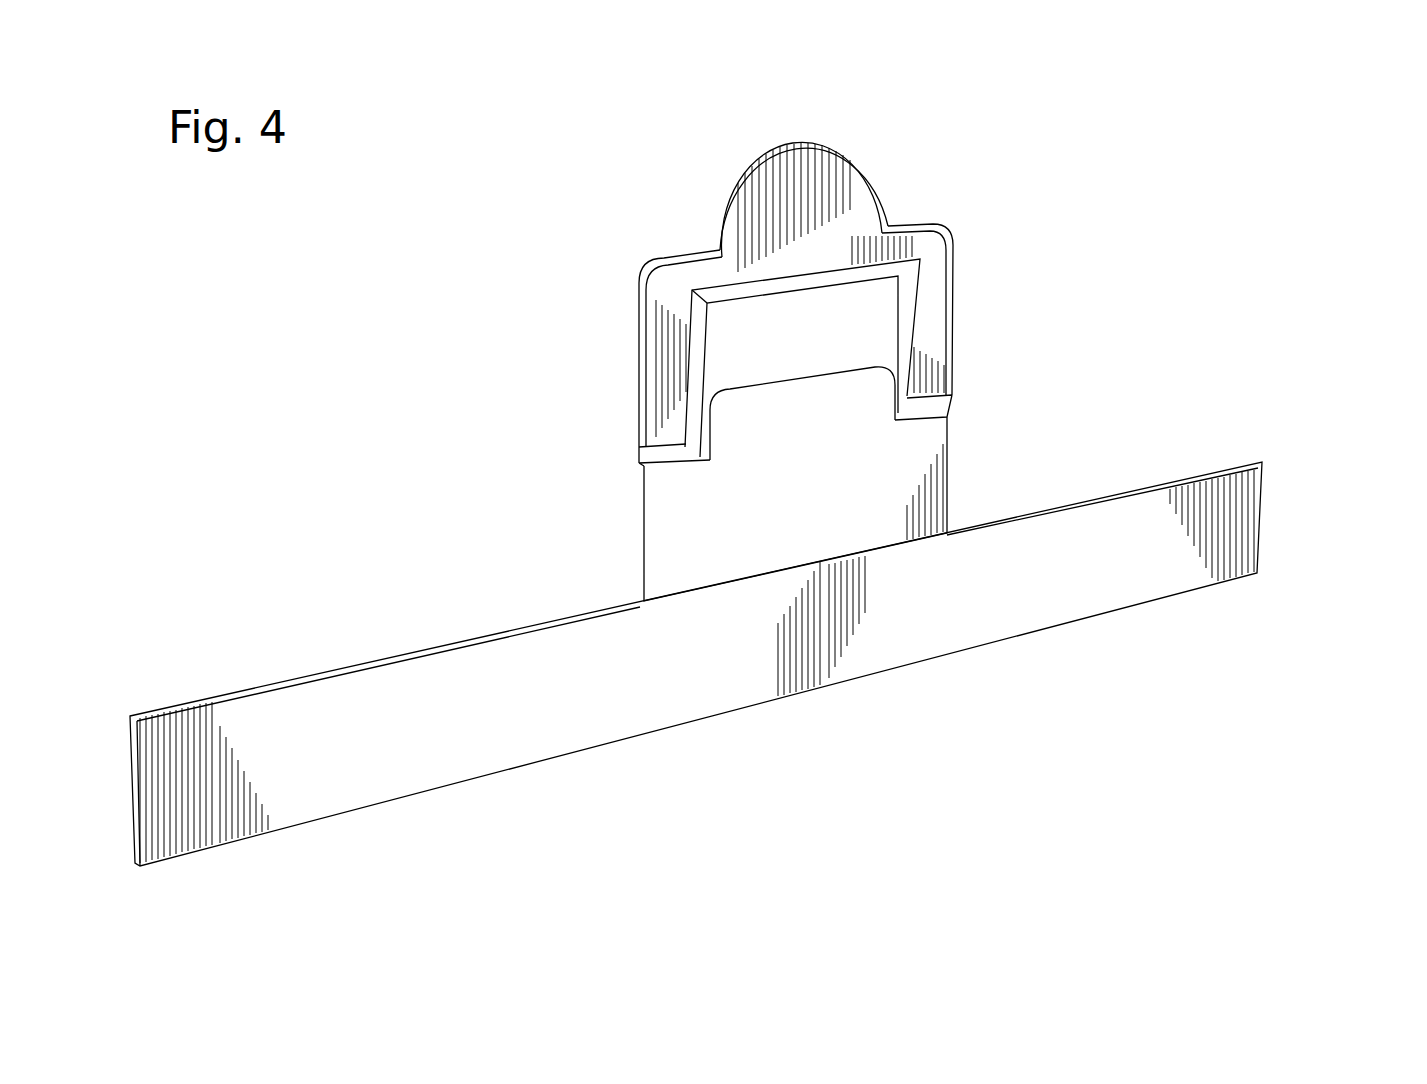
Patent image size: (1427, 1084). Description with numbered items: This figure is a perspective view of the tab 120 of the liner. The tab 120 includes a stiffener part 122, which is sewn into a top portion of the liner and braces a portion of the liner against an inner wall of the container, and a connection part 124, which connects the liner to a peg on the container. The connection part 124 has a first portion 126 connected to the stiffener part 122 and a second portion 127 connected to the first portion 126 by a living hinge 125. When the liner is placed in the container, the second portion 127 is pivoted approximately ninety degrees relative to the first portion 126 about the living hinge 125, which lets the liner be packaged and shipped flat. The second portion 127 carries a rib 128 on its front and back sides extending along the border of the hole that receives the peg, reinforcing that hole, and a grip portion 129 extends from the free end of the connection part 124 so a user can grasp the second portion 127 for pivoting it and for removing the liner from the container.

The tab 120 is at (1163, 143).
The stiffener part 122 is at (997, 590).
The connection part 124 is at (587, 164).
The living hinge 125 is at (940, 403).
The first portion 126 is at (895, 473).
The second portion 127 is at (937, 302).
The rib 128 is at (922, 268).
The grip portion 129 is at (860, 210).